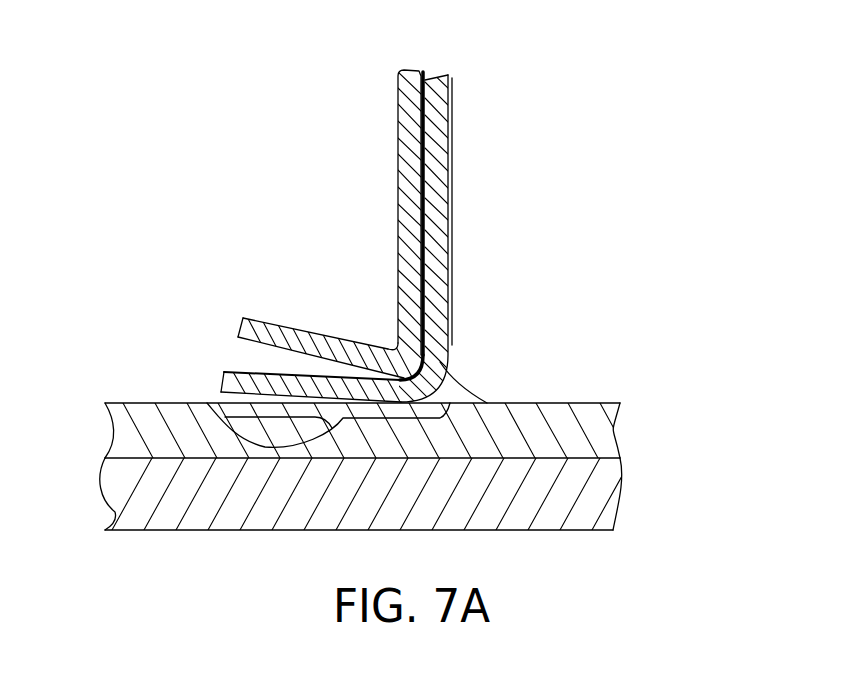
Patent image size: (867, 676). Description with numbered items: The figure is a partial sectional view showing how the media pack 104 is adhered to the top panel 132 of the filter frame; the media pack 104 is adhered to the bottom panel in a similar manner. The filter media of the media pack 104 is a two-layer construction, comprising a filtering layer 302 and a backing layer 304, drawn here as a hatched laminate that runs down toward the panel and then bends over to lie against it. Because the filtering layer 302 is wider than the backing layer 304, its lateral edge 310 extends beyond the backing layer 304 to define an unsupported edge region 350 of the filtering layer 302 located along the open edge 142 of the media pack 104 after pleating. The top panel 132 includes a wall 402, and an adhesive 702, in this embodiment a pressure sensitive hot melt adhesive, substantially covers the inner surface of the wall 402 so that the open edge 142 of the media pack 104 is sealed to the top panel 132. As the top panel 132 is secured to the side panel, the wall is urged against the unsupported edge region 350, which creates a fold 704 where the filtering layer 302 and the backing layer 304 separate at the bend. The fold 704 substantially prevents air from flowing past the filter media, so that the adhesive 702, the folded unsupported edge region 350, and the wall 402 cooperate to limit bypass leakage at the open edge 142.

The media pack 104 is at (332, 205).
The filtering layer 302 is at (276, 189).
The backing layer 304 is at (398, 238).
The lateral edge 310 is at (240, 319).
The open edge 142 is at (251, 274).
The fold 704 is at (363, 313).
The adhesive 702 is at (555, 402).
The unsupported edge region 350 is at (207, 403).
The top panel 132 is at (384, 502).
The wall 402 is at (508, 515).